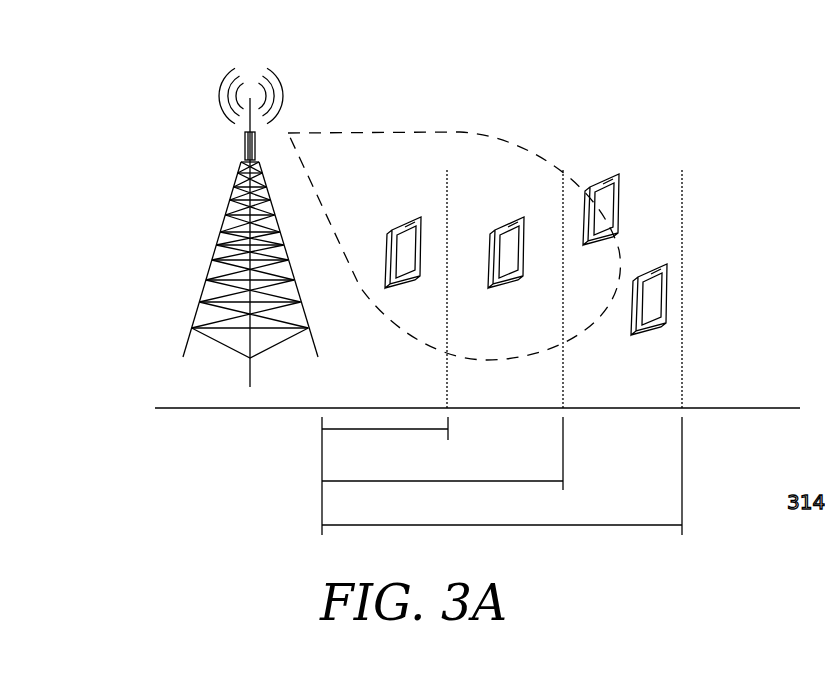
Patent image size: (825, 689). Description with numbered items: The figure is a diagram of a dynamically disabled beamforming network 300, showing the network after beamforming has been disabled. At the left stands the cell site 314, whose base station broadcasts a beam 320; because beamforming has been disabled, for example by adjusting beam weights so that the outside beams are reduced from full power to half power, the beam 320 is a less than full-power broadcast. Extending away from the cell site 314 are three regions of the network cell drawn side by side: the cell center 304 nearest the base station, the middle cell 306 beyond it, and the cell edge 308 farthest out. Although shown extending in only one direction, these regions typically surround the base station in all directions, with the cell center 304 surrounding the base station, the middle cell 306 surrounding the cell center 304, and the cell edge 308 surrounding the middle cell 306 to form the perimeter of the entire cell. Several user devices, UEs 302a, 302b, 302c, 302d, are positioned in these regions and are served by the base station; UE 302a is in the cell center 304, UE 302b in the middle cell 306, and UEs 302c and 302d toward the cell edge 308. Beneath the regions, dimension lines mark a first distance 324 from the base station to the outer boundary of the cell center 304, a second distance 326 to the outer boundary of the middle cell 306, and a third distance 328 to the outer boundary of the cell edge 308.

The dynamically disabled beamforming network 300 is at (769, 106).
The cell site 314 is at (309, 89).
The beam 320 is at (466, 135).
The UE 302a is at (403, 219).
The UE 302b is at (503, 206).
The UE 302c is at (605, 173).
The UE 302d is at (667, 282).
The cell center 304 is at (405, 396).
The middle cell 306 is at (528, 396).
The cell edge 308 is at (648, 396).
The first distance 324 is at (374, 430).
The second distance 326 is at (441, 482).
The third distance 328 is at (505, 527).